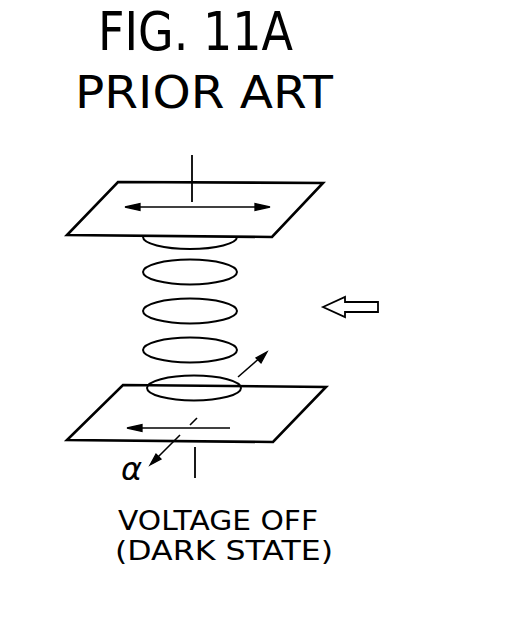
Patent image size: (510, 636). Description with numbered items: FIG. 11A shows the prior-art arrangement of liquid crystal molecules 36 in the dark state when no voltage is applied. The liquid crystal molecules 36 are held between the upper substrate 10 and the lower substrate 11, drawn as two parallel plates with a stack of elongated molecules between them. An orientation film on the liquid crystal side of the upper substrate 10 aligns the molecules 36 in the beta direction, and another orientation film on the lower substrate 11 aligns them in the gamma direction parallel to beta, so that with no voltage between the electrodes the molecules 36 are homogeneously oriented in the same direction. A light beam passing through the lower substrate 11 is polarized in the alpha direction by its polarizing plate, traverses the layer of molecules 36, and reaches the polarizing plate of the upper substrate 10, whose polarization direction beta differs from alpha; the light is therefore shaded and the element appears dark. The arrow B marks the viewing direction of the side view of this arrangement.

The upper substrate 10 is at (303, 205).
The lower substrate 11 is at (302, 417).
The liquid crystal molecules 36 is at (143, 272).
The viewing direction arrow B is at (367, 311).